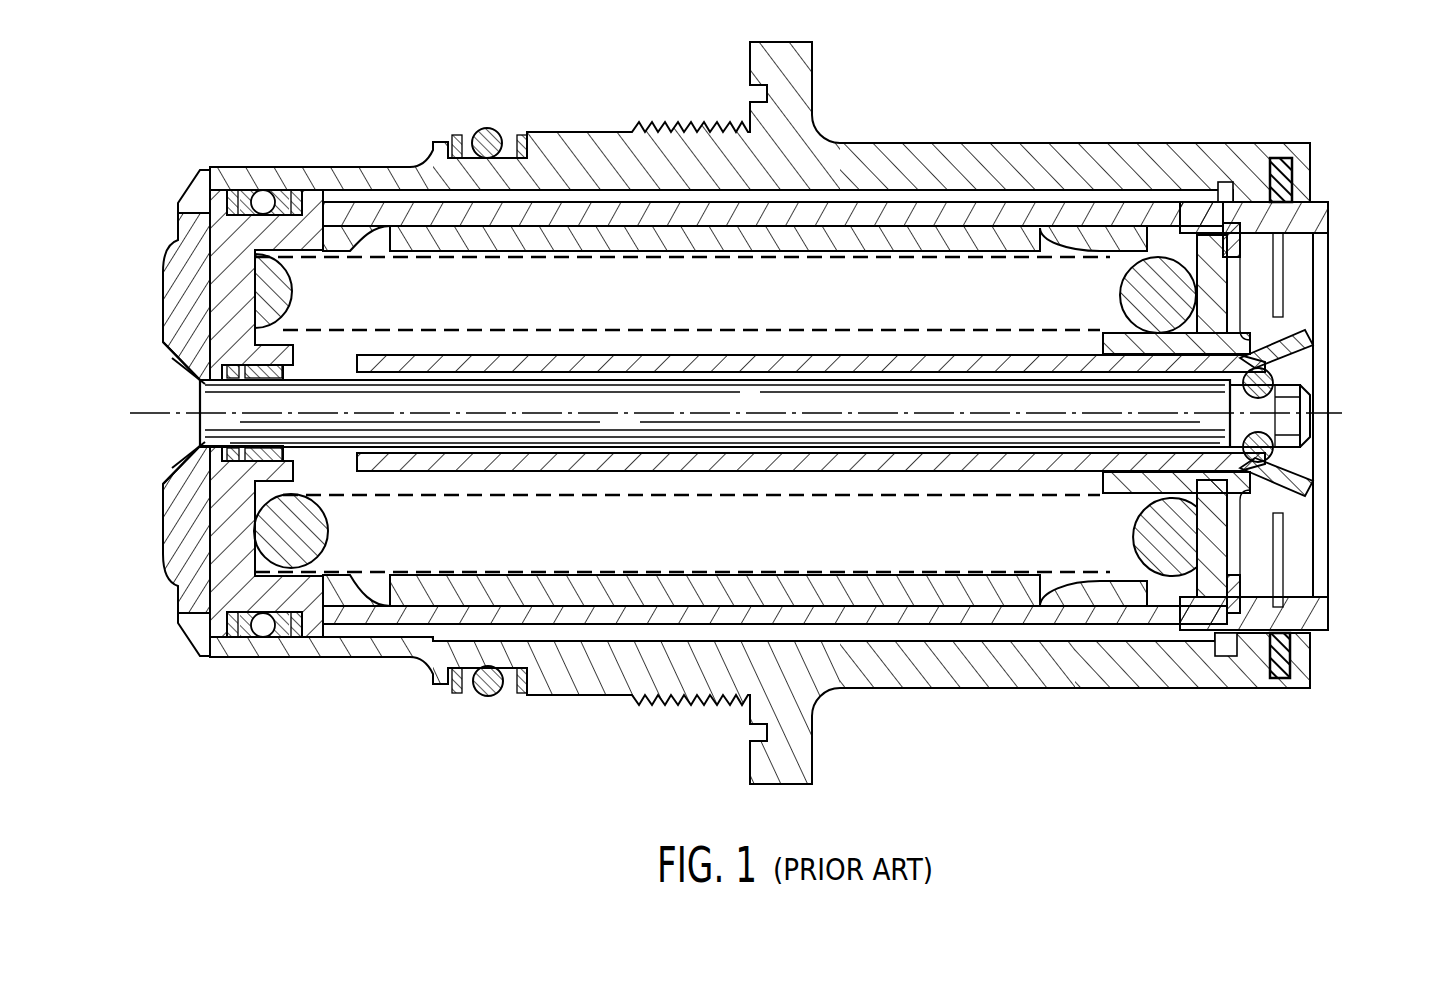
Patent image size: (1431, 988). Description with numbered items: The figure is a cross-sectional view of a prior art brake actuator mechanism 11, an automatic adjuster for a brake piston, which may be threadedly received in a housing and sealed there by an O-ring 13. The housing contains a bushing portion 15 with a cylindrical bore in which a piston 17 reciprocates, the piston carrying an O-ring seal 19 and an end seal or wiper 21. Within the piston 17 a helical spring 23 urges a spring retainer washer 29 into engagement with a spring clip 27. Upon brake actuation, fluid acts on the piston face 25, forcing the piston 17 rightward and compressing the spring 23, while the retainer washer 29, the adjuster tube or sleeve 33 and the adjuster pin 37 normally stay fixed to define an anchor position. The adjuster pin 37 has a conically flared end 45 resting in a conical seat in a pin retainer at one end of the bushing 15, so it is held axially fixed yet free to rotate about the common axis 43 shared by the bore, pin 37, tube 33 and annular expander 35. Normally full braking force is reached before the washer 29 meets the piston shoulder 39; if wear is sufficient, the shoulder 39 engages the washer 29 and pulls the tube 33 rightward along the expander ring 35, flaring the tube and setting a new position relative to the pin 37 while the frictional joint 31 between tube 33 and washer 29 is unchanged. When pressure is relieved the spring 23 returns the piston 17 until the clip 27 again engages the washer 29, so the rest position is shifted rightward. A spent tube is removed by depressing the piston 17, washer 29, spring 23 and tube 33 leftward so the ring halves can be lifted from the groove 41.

The brake actuator mechanism 11 is at (990, 733).
The O-ring 13 is at (492, 690).
The bushing portion 15 is at (848, 667).
The piston 17 is at (1310, 615).
The O-ring seal 19 is at (270, 192).
The end seal or wiper 21 is at (1280, 672).
The helical spring 23 is at (272, 523).
The piston face 25 is at (210, 325).
The spring clip 27 is at (1243, 245).
The spring retainer washer 29 is at (1260, 498).
The frictional joint 31 is at (1283, 333).
The adjuster tube or sleeve 33 is at (1283, 363).
The annular expander 35 is at (1290, 467).
The adjuster pin 37 is at (237, 398).
The piston shoulder 39 is at (1150, 590).
The groove 41 is at (1257, 407).
The common axis 43 is at (1340, 420).
The conically flared end 45 is at (190, 452).